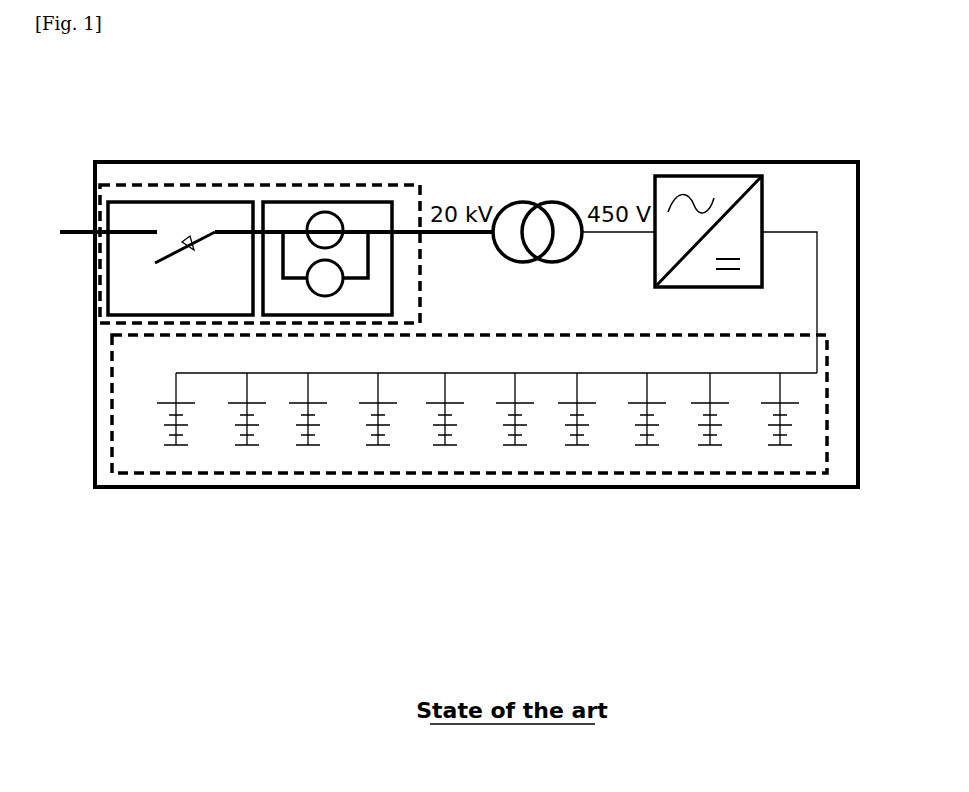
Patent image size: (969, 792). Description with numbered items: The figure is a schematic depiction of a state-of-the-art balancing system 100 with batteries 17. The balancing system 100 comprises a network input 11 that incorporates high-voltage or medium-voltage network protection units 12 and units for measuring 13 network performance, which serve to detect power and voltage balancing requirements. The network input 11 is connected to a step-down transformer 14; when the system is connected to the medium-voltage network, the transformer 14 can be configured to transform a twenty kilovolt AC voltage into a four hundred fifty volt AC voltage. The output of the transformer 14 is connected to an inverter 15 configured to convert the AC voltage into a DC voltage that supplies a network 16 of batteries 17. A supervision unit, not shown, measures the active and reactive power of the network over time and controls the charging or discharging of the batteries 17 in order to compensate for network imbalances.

The balancing system 100 is at (317, 162).
The network input 11 is at (131, 185).
The network protection units 12 is at (178, 202).
The units for measuring 13 is at (367, 202).
The step-down transformer 14 is at (518, 204).
The inverter 15 is at (728, 176).
The network of batteries 16 is at (469, 451).
The batteries 17 is at (183, 447).